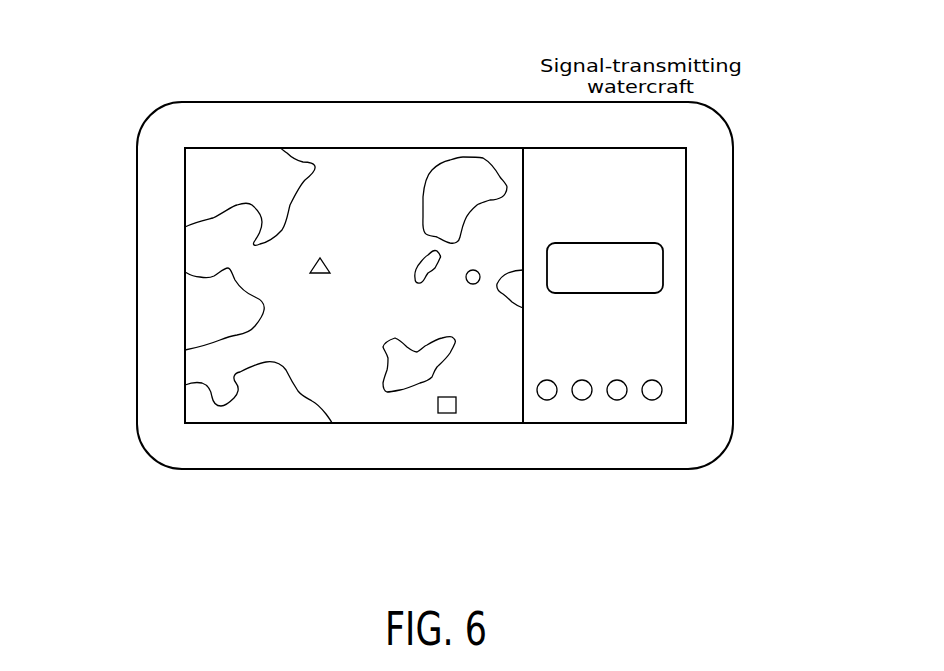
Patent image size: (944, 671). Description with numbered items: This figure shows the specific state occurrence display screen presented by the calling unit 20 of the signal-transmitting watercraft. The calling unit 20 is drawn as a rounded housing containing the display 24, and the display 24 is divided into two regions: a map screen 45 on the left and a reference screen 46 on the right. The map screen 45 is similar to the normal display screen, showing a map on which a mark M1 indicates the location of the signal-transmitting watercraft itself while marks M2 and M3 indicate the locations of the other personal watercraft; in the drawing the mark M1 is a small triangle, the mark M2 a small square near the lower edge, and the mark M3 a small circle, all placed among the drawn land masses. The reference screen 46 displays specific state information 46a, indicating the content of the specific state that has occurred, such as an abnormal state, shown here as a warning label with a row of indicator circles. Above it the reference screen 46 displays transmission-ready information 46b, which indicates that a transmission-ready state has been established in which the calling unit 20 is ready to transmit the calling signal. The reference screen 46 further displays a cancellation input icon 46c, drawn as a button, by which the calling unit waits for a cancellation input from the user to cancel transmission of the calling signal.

The calling unit 20 is at (138, 135).
The display 24 is at (185, 297).
The map screen 45 is at (490, 403).
The reference screen 46 is at (600, 415).
The specific state information 46a is at (658, 357).
The transmission-ready information 46b is at (668, 203).
The cancellation input icon 46c is at (665, 267).
The mark indicating location of own watercraft M1 is at (319, 257).
The mark indicating location of another watercraft M2 is at (450, 413).
The mark indicating location of another watercraft M3 is at (476, 269).